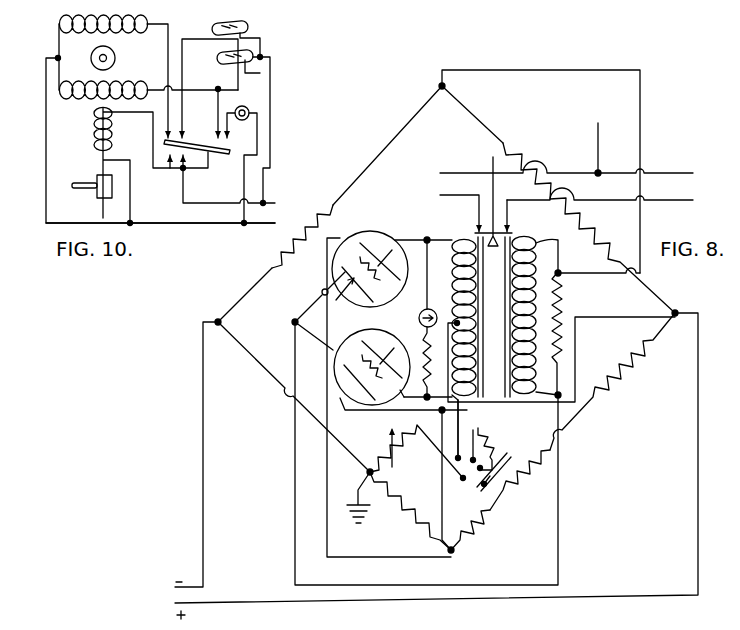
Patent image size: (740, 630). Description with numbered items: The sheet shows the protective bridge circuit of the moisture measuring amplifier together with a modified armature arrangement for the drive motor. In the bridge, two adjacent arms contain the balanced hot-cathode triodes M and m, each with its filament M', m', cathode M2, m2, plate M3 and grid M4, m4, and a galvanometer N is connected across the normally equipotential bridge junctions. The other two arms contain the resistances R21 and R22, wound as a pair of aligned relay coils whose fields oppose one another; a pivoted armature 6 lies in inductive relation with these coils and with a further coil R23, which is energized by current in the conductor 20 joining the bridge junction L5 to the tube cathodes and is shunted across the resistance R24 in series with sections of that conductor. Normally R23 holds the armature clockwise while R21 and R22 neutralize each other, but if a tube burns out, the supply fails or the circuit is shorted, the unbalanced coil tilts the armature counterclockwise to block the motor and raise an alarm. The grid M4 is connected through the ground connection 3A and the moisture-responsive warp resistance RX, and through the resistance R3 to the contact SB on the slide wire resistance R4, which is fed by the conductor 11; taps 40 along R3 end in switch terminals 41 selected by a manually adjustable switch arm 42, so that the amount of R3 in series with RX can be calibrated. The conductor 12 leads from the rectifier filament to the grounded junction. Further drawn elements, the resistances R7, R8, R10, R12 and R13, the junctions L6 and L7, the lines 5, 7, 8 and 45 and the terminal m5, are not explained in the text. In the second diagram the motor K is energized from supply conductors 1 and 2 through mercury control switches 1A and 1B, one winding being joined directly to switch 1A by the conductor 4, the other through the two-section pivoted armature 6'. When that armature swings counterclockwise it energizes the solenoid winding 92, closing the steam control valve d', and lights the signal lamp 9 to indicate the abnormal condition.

In FIG. 10, the motor K is at (103, 57).
In FIG. 10, the lead wire 7 is at (170, 33).
In FIG. 10, the control switch 1B is at (250, 27).
In FIG. 10, the control switch 1A is at (222, 56).
In FIG. 10, the conductor 4 is at (212, 89).
In FIG. 10, the signal lamp 9 is at (244, 106).
In FIG. 10, the solenoid winding 92 is at (95, 150).
In FIG. 10, the steam control valve d' is at (90, 196).
In FIG. 10, the pivoted armature 6' is at (200, 160).
In FIG. 10, the supply conductor 2 is at (200, 203).
In FIG. 8, the supply conductor 2 is at (599, 143).
In FIG. 10, the supply conductor 1 is at (222, 223).
In FIG. 8, the supply conductor 1 is at (491, 166).
In FIG. 8, the bridge junction L5 is at (444, 86).
In FIG. 8, the bridge junction L6 is at (454, 553).
In FIG. 8, the bridge junction L7 is at (218, 320).
In FIG. 8, the bridge resistor R7 is at (318, 210).
In FIG. 8, the bridge resistor R8 is at (600, 233).
In FIG. 8, the bridge resistor R10 is at (408, 507).
In FIG. 8, the bridge resistor R12 is at (626, 379).
In FIG. 8, the resistor R13 is at (521, 480).
In FIG. 8, the slide wire resistance R4 is at (476, 530).
In FIG. 8, the resistance R3 is at (494, 432).
In FIG. 8, the resistance R21 is at (467, 410).
In FIG. 8, the resistance R22 is at (452, 262).
In FIG. 8, the coil R23 is at (535, 244).
In FIG. 8, the resistance R24 is at (562, 293).
In FIG. 8, the moisture responsive resistance RX is at (389, 430).
In FIG. 8, the conductor 20 is at (641, 104).
In FIG. 8, the conductor 8 is at (690, 198).
In FIG. 8, the conductor 5 is at (440, 195).
In FIG. 8, the pivoted armature 6 is at (517, 217).
In FIG. 8, the galvanometer N is at (418, 318).
In FIG. 8, the triode tube element m is at (389, 382).
In FIG. 8, the galvanometer terminal m5 is at (398, 236).
In FIG. 8, the cathode m2 is at (332, 281).
In FIG. 8, the grid m4 is at (402, 280).
In FIG. 8, the filament m' is at (340, 300).
In FIG. 8, the triode tube element M is at (400, 363).
In FIG. 8, the grid M4 is at (400, 338).
In FIG. 8, the filament M' is at (311, 341).
In FIG. 8, the cathode M2 is at (340, 380).
In FIG. 8, the plate M3 is at (399, 395).
In FIG. 8, the switch arm 42 is at (462, 478).
In FIG. 8, the switch terminals 41 is at (474, 482).
In FIG. 8, the taps 40 is at (500, 455).
In FIG. 8, the contact SB is at (500, 486).
In FIG. 8, the ground connection 3A is at (358, 494).
In FIG. 8, the conductor 11 is at (203, 507).
In FIG. 8, the conductor 12 is at (700, 452).
In FIG. 8, the conductor 45 is at (478, 626).